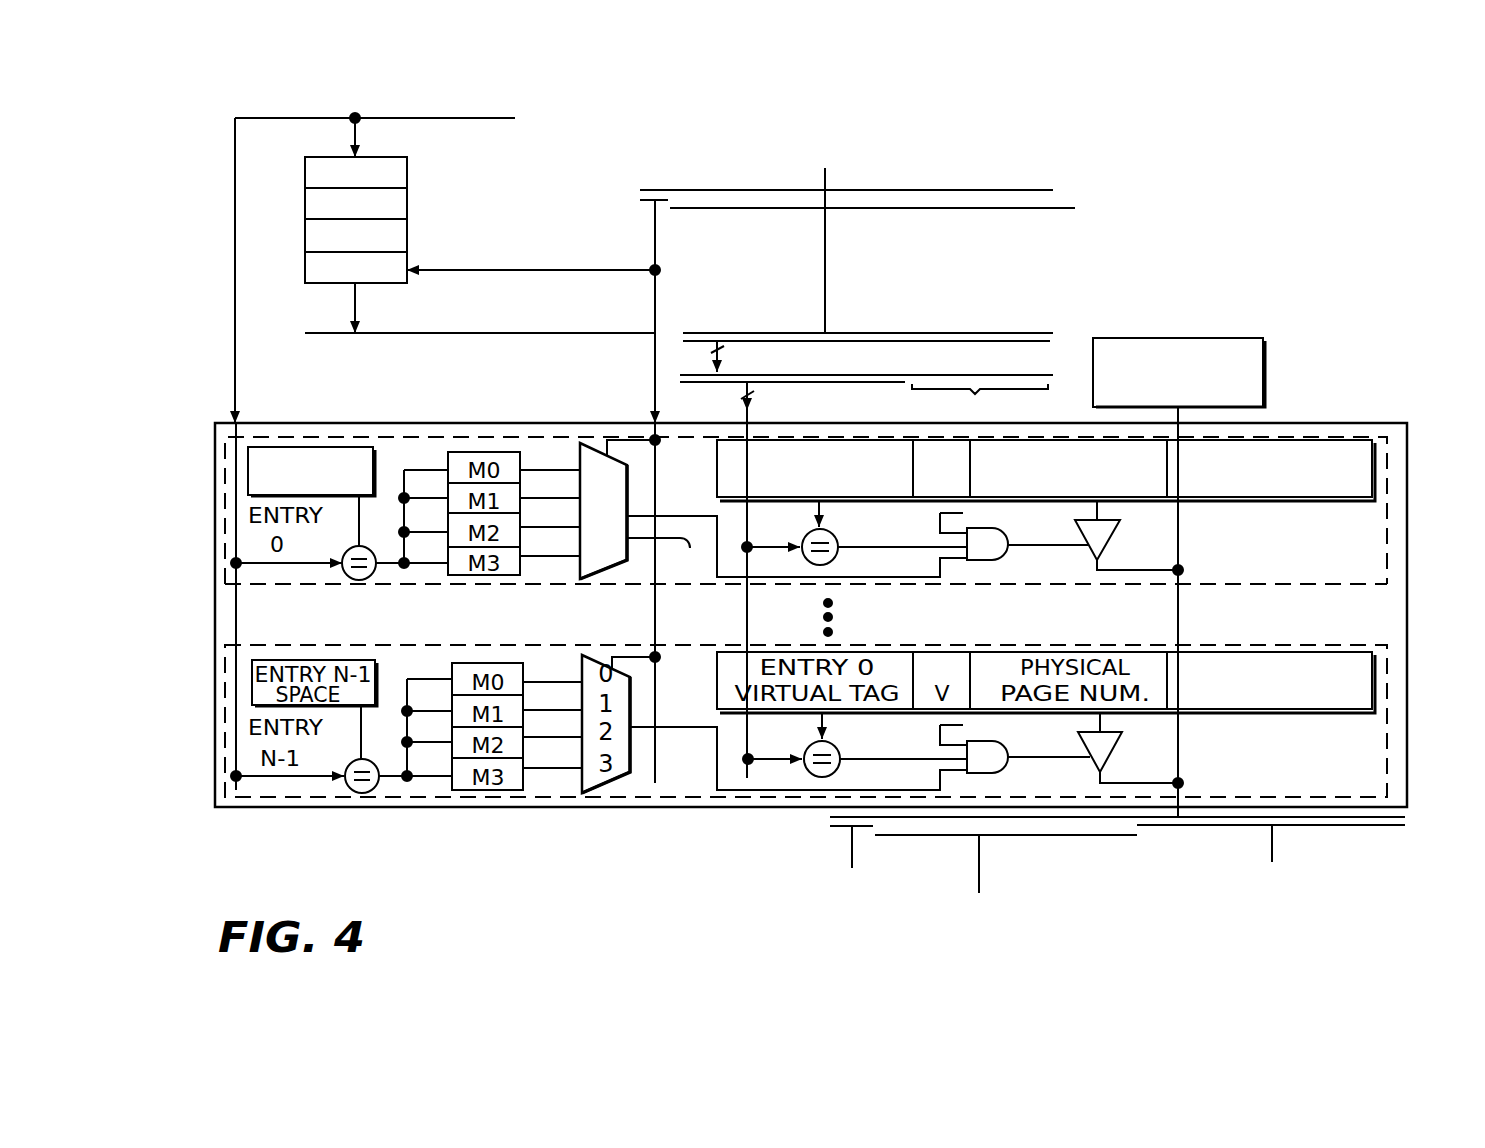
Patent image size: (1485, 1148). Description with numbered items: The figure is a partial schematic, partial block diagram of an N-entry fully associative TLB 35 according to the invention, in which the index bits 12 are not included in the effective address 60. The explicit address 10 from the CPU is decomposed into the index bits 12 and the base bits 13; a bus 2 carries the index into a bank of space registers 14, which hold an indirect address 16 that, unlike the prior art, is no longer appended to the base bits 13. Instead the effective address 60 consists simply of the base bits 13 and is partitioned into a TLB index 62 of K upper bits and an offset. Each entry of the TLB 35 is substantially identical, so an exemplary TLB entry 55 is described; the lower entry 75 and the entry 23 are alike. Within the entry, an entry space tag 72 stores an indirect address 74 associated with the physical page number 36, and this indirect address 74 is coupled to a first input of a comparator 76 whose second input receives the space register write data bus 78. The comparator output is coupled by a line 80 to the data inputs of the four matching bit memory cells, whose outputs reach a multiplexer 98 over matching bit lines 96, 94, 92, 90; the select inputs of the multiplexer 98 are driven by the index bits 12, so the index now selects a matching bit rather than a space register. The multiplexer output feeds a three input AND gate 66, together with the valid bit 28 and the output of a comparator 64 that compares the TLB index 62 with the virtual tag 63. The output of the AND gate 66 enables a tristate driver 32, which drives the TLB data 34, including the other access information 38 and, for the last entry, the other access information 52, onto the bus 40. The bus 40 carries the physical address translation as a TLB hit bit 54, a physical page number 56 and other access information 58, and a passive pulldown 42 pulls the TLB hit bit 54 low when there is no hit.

The index bus 2 is at (663, 233).
The explicit address 10 is at (1035, 190).
The index bits 12 is at (655, 292).
The base bits 13 is at (998, 208).
The space registers 14 is at (306, 233).
The indirect address 16 is at (356, 303).
The entry 23 is at (1312, 584).
The valid bit 28 is at (930, 512).
The tristate driver 32 is at (1117, 538).
The TLB data 34 is at (1285, 502).
The TLB 35 is at (1407, 641).
The physical page number 36 is at (1055, 437).
The other access information 38 is at (1323, 437).
The bus 40 is at (1178, 608).
The passive pulldown 42 is at (1263, 368).
The other access info field (entry N-1) 52 is at (1305, 716).
The TLB hit bit 54 is at (848, 853).
The TLB entry 55 is at (1390, 522).
The physical page number 56 is at (980, 862).
The other access information 58 is at (1268, 851).
The effective address 60 is at (1050, 345).
The TLB index 62 is at (700, 383).
The virtual tag 63 is at (717, 473).
The comparator 64 is at (805, 532).
The three input AND gate 66 is at (1012, 556).
The entry space tag 72 is at (318, 447).
The indirect address 74 is at (359, 512).
The TLB entry N-1 75 is at (1390, 742).
The comparator 76 is at (345, 580).
The space register write data bus 78 is at (450, 118).
The line 80 is at (380, 565).
The matching bit line 90 is at (535, 560).
The matching bit line 92 is at (548, 527).
The matching bit line 94 is at (536, 497).
The matching bit line 96 is at (553, 470).
The multiplexer 98 is at (773, 509).